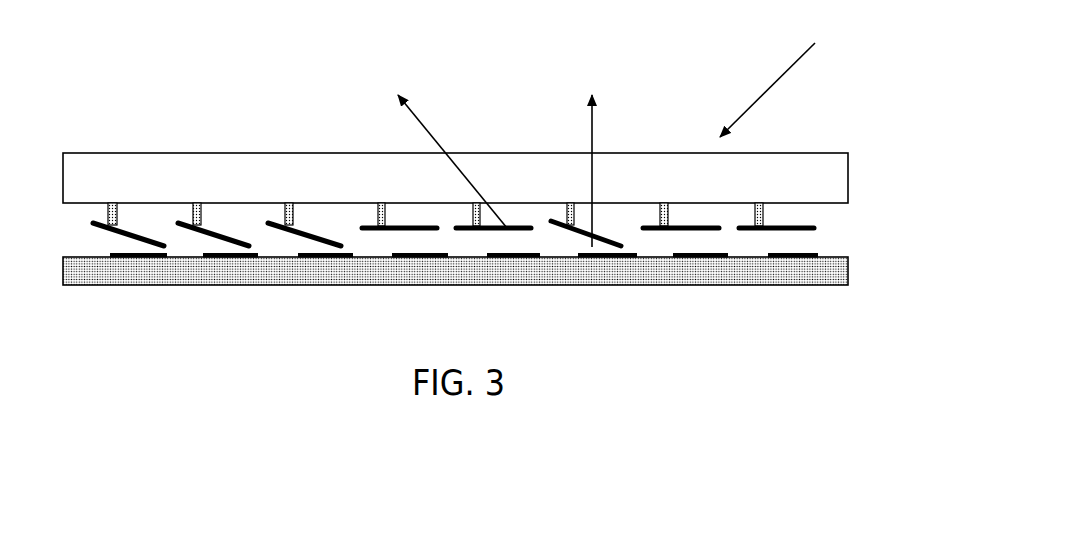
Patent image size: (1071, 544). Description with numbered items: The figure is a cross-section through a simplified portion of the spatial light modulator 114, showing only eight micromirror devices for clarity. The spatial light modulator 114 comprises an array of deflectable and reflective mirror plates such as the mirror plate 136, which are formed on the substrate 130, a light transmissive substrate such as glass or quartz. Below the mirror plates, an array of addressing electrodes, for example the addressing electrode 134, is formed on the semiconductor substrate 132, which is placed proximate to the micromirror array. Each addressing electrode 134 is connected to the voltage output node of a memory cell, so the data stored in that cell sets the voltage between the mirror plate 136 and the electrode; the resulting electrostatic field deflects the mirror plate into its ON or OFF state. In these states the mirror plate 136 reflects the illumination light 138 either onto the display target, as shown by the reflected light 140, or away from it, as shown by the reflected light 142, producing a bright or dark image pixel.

The spatial light modulator 114 is at (275, 92).
The substrate 130 is at (145, 153).
The semiconductor substrate 132 is at (190, 284).
The addressing electrode 134 is at (430, 257).
The mirror plate 136 is at (420, 227).
The illumination light 138 is at (775, 87).
The light reflected onto display target 140 is at (594, 130).
The light reflected away from display target 142 is at (427, 120).